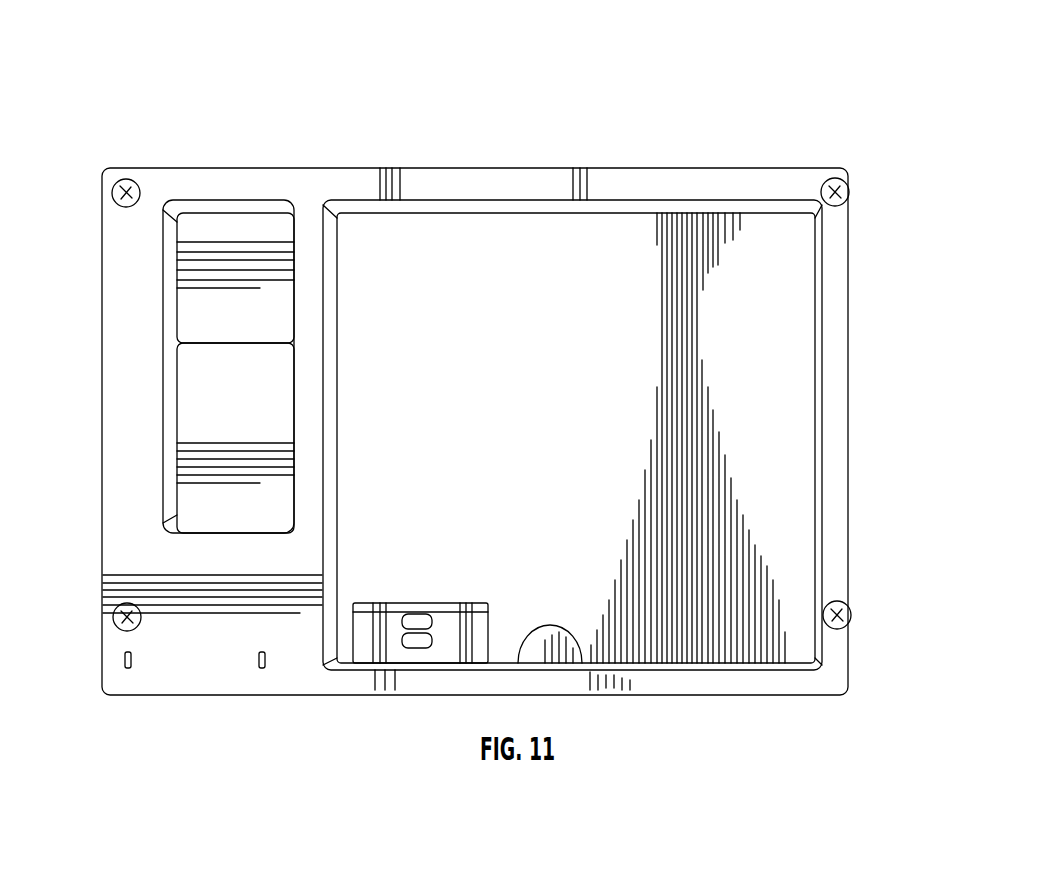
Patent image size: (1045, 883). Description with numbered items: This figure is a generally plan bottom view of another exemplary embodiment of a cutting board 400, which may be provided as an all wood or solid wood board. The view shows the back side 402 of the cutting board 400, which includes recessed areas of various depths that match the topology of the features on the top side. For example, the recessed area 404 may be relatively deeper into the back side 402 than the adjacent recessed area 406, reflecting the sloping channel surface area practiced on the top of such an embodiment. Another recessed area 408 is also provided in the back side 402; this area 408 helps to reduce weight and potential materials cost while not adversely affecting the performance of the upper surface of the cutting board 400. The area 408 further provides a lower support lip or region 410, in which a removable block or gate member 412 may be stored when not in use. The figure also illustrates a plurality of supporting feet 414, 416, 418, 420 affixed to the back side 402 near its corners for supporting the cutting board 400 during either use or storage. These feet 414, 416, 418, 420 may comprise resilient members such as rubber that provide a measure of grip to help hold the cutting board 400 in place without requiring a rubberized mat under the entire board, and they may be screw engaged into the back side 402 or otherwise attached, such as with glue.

The cutting board 400 is at (674, 124).
The back side 402 is at (214, 662).
The recessed area 404 is at (177, 240).
The recessed area 406 is at (175, 400).
The recessed area 408 is at (427, 225).
The lower support lip 410 is at (582, 663).
The removable block or gate member 412 is at (380, 603).
The supporting foot 414 is at (128, 172).
The supporting foot 416 is at (840, 190).
The supporting foot 418 is at (847, 617).
The supporting foot 420 is at (115, 630).